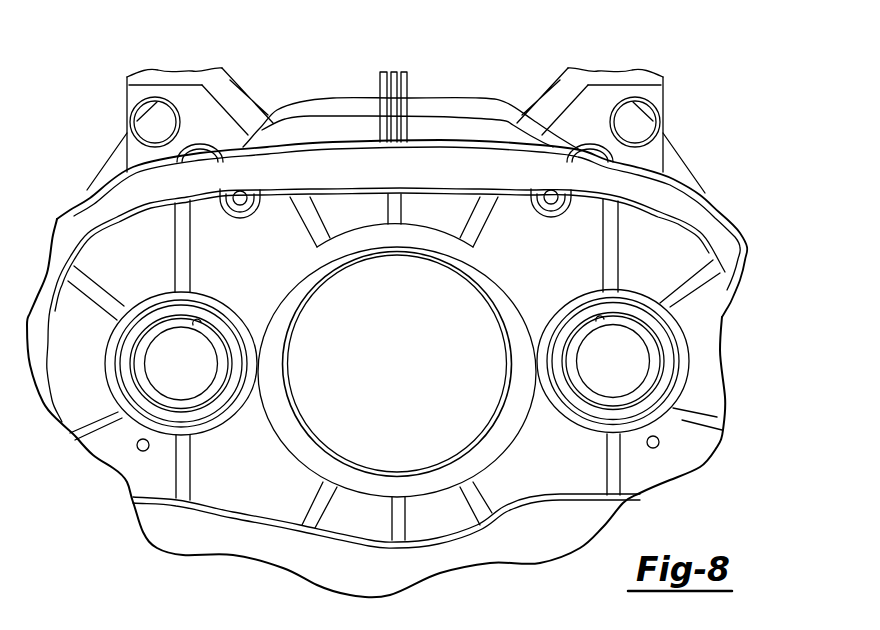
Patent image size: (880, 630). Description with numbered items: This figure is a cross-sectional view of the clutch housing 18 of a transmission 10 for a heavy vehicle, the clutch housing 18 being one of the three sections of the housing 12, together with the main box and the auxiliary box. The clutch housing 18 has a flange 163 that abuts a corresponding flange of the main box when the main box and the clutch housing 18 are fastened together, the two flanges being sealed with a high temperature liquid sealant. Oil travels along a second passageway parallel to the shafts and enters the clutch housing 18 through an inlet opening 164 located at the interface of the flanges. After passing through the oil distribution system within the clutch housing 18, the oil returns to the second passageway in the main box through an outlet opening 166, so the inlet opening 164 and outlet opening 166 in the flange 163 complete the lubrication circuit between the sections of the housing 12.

The transmission 10 is at (443, 62).
The housing 12 is at (476, 77).
The clutch housing 18 is at (757, 278).
The flange 163 is at (670, 189).
The inlet opening 164 is at (550, 190).
The outlet opening 166 is at (242, 191).